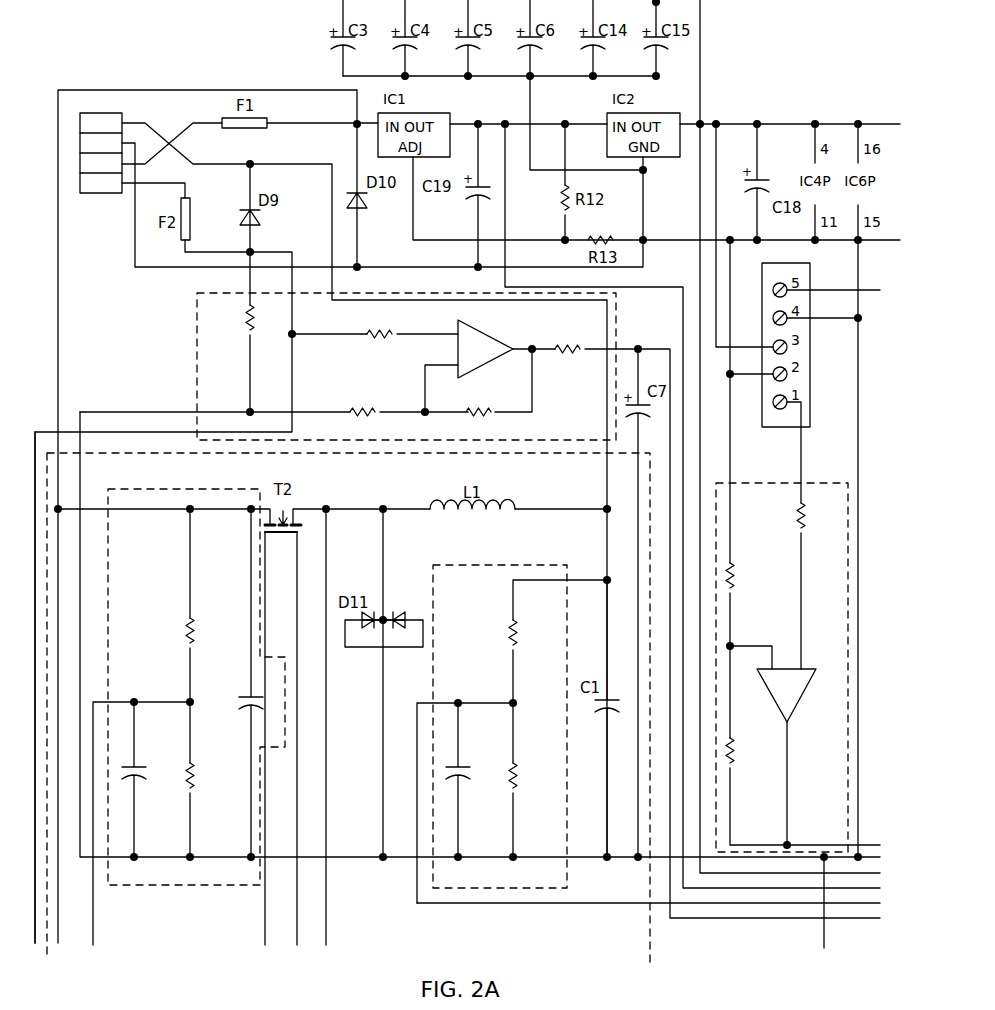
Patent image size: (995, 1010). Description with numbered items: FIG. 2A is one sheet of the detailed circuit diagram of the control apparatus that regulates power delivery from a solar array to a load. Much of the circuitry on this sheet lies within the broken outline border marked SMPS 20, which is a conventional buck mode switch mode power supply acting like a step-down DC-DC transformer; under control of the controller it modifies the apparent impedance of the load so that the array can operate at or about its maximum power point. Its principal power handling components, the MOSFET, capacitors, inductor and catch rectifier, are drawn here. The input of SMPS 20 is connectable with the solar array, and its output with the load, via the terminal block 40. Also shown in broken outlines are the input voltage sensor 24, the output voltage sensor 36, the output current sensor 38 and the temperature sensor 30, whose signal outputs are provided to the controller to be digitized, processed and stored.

The SMPS 20 is at (650, 948).
The input voltage sensor 24 is at (140, 489).
The temperature sensor 30 is at (768, 483).
The output voltage sensor 36 is at (527, 565).
The output current sensor 38 is at (195, 352).
The terminal block 40 is at (98, 112).